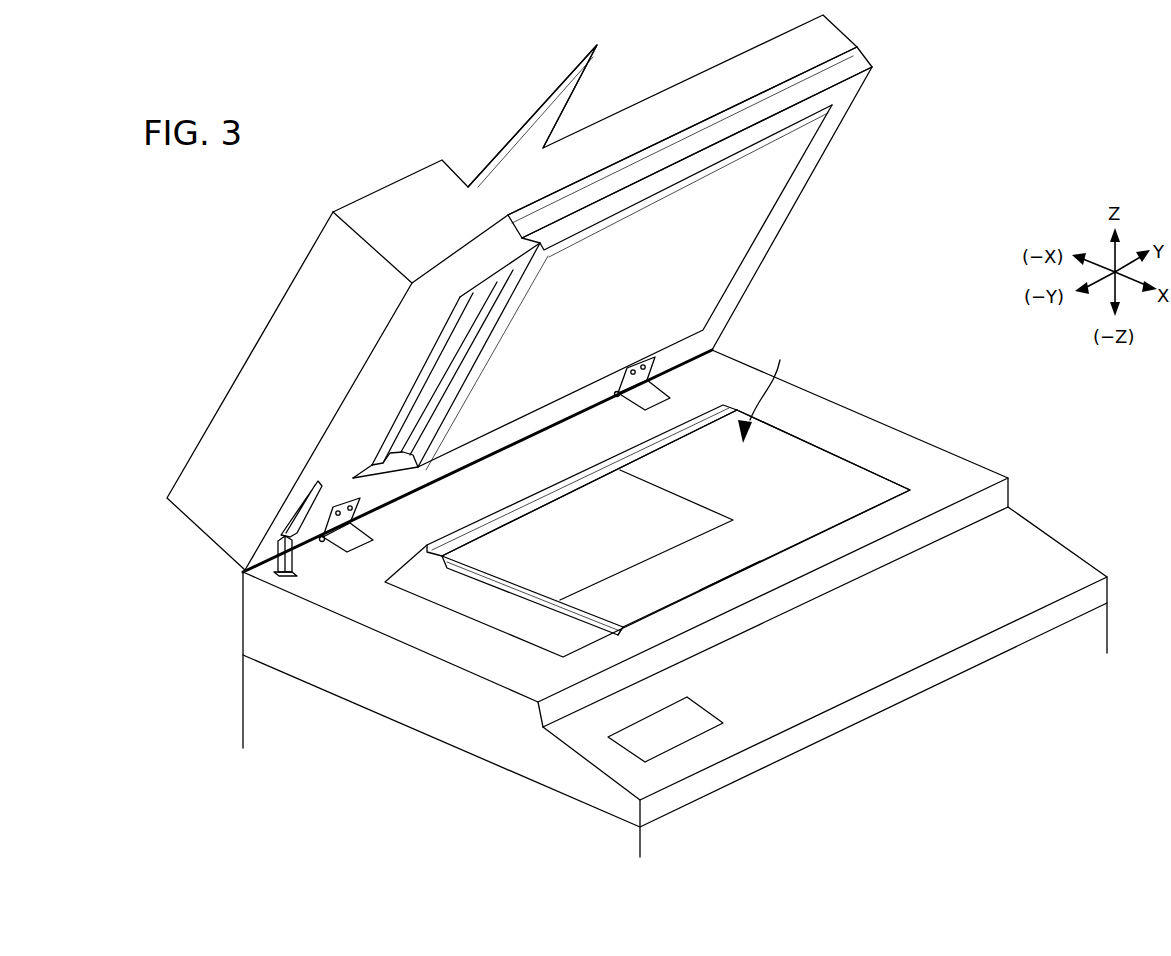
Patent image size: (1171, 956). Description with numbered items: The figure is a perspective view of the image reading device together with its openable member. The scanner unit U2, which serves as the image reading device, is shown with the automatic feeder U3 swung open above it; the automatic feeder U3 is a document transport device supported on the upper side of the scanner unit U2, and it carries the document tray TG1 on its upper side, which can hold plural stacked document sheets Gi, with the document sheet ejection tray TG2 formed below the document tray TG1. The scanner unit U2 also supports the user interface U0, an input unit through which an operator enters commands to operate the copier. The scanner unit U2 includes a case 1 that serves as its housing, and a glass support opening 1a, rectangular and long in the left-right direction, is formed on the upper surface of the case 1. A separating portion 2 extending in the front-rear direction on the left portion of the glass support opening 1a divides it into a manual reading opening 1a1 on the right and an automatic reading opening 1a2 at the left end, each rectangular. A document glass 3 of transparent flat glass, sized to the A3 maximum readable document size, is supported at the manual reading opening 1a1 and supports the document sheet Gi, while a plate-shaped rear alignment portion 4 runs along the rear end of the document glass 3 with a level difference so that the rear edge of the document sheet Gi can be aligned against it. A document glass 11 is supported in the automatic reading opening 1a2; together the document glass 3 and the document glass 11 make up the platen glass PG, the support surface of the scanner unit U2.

The case 1 is at (910, 455).
The glass support opening 1a is at (822, 838).
The manual reading opening 1a1 is at (692, 592).
The automatic reading opening 1a2 is at (573, 648).
The separating portion 2 is at (560, 598).
The document glass 3 is at (792, 452).
The rear alignment portion 4 is at (543, 498).
The document glass 11 is at (462, 608).
The document sheet Gi is at (645, 512).
The platen glass PG is at (766, 390).
The document tray TG1 is at (528, 117).
The document sheet ejection tray TG2 is at (623, 107).
The user interface U0 is at (602, 757).
The scanner unit U2 is at (224, 617).
The automatic feeder U3 is at (200, 552).